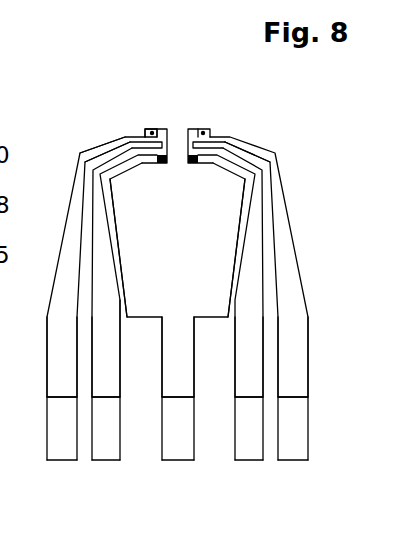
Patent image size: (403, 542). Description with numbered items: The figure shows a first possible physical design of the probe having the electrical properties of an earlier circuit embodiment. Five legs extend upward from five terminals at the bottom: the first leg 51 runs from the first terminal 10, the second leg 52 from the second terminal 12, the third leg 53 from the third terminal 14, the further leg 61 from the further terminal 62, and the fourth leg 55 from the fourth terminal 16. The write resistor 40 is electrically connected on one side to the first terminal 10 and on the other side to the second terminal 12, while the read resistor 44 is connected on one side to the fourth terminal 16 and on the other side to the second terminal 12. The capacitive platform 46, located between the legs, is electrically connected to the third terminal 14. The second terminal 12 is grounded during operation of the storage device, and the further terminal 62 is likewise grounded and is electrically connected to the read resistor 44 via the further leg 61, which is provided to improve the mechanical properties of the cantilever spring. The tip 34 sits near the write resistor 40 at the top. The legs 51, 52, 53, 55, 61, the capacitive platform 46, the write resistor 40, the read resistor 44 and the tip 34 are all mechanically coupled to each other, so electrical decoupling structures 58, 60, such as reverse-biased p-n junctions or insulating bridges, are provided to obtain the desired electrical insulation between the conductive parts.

The first terminal 10 is at (58, 456).
The second terminal 12 is at (107, 456).
The third terminal 14 is at (178, 456).
The fourth terminal 16 is at (292, 456).
The tip 34 is at (150, 131).
The write resistor 40 is at (151, 131).
The read resistor 44 is at (203, 131).
The capacitive platform 46 is at (230, 214).
The first leg 51 is at (58, 363).
The second leg 52 is at (112, 332).
The third leg 53 is at (190, 332).
The fourth leg 55 is at (300, 370).
The electrical decoupling structure 58 is at (150, 152).
The electrical decoupling structure 60 is at (198, 144).
The further leg 61 is at (243, 380).
The further terminal 62 is at (246, 456).